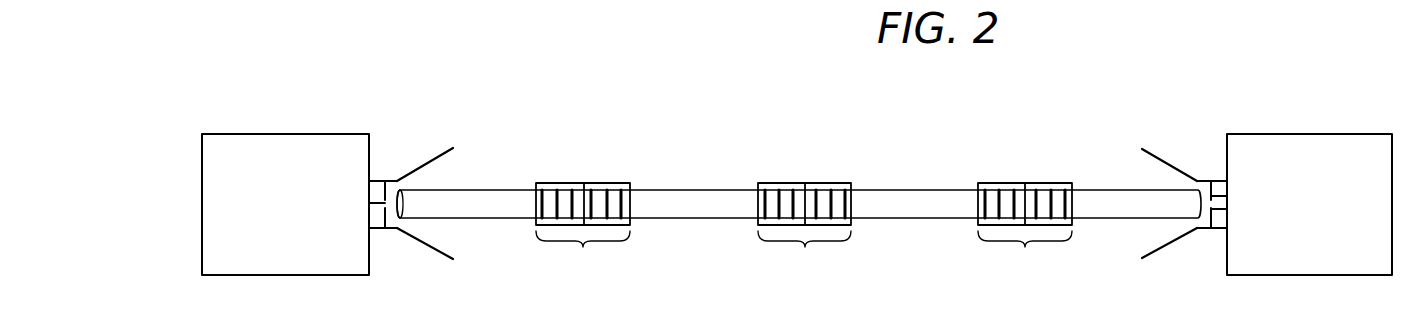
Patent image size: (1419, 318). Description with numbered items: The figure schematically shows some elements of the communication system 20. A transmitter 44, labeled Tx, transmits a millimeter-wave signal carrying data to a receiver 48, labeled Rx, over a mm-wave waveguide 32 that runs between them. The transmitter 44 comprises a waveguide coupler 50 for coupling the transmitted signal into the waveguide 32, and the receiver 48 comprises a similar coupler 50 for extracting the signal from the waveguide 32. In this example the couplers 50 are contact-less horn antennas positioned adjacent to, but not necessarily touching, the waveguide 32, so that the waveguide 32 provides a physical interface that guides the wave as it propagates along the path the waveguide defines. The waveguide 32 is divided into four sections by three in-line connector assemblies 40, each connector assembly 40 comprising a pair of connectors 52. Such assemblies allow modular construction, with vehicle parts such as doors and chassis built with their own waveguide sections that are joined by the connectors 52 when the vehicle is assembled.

The communication system 20 is at (168, 58).
The mm-wave waveguide 32 is at (503, 190).
The connector assembly 40 is at (804, 253).
The transmitter 44 is at (303, 134).
The receiver 48 is at (1271, 134).
The waveguide coupler 50 is at (425, 163).
The connector 52 is at (595, 183).